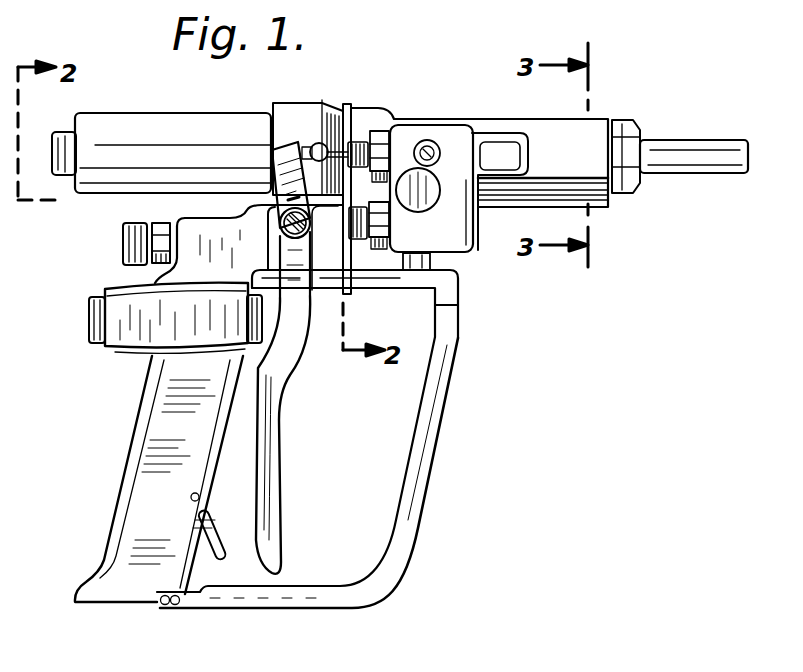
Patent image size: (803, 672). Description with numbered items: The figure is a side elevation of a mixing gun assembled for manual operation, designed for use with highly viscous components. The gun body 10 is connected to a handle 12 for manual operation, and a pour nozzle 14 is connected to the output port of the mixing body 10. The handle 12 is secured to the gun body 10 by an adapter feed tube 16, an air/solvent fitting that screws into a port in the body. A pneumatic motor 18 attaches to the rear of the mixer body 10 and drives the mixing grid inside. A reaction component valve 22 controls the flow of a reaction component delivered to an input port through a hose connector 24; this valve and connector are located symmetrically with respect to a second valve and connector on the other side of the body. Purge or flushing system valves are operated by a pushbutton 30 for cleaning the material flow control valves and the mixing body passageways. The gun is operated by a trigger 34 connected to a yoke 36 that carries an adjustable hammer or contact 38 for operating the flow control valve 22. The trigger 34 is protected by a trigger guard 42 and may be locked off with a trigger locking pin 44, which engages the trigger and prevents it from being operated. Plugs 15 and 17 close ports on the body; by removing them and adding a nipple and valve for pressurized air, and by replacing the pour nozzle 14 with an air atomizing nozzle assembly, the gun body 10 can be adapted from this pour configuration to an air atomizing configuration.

The gun body 10 is at (417, 110).
The handle 12 is at (120, 494).
The pour nozzle 14 is at (692, 141).
The plug 15 is at (89, 320).
The adapter feed tube 16 is at (123, 243).
The plug 17 is at (262, 342).
The pneumatic motor 18 is at (193, 128).
The reaction component valve 22 is at (358, 133).
The hose connector 24 is at (430, 272).
The pushbutton 30 is at (430, 198).
The trigger 34 is at (275, 442).
The yoke 36 is at (292, 148).
The adjustable hammer 38 is at (328, 142).
The trigger guard 42 is at (345, 606).
The trigger locking pin 44 is at (216, 562).